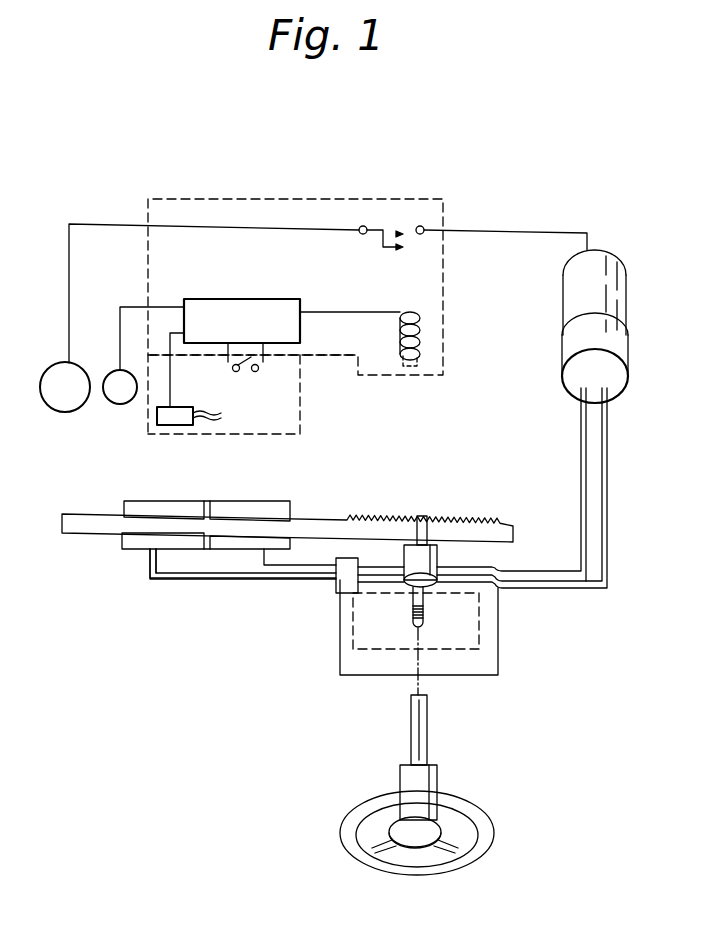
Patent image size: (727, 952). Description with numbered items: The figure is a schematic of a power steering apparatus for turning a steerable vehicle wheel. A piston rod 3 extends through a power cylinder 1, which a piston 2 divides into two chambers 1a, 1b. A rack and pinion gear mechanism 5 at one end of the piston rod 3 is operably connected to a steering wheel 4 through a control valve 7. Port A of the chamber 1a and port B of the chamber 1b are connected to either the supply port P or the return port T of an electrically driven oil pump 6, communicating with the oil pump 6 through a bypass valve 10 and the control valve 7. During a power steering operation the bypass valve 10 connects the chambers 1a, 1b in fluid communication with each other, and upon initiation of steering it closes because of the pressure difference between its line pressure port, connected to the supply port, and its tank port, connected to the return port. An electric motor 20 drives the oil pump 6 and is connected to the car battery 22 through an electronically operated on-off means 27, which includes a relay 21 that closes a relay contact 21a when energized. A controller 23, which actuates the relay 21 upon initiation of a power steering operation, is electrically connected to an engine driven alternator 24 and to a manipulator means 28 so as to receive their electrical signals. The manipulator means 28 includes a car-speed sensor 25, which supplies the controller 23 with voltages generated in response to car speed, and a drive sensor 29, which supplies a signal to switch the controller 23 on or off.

The power cylinder 1 is at (132, 540).
The chamber 1a is at (150, 504).
The chamber 1b is at (252, 503).
The piston 2 is at (211, 502).
The piston rod 3 is at (322, 518).
The steering wheel 4 is at (356, 845).
The rack and pinion gear mechanism 5 is at (428, 518).
The oil pump 6 is at (567, 345).
The control valve 7 is at (408, 586).
The bypass valve 10 is at (344, 580).
The electric motor 20 is at (572, 297).
The relay 21 is at (425, 310).
The relay contact 21a is at (396, 221).
The battery 22 is at (66, 400).
The controller 23 is at (241, 298).
The engine driven alternator 24 is at (113, 400).
The car-speed sensor 25 is at (160, 428).
The on-off means 27 is at (315, 199).
The manipulator means 28 is at (300, 434).
The drive sensor 29 is at (241, 373).